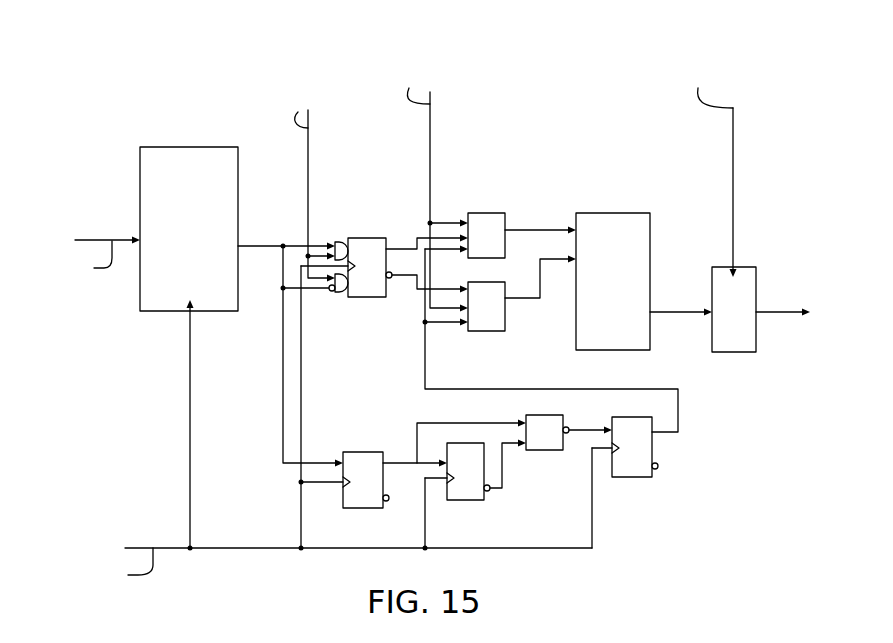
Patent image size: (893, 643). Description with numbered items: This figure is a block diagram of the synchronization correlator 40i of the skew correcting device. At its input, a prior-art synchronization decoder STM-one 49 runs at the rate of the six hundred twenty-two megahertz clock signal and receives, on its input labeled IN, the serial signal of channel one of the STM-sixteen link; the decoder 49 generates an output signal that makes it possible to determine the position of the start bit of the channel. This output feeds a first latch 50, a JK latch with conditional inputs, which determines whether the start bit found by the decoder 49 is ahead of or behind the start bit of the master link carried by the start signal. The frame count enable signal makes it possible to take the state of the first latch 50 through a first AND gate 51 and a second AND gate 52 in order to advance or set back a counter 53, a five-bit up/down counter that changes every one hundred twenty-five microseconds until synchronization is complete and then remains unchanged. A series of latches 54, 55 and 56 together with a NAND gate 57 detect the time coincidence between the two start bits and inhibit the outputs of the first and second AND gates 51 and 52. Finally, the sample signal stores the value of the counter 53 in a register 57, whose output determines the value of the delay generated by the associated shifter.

The synchronization correlator 40i is at (588, 107).
The synchronization decoder STM-1 49 is at (184, 147).
The first latch 50 is at (365, 238).
The first AND gate 51 is at (490, 213).
The second AND gate 52 is at (493, 331).
The counter 53 is at (613, 213).
The latch 54 is at (357, 452).
The latch 55 is at (455, 500).
The latch 56 is at (640, 477).
The NAND gate / register 57 is at (737, 352).